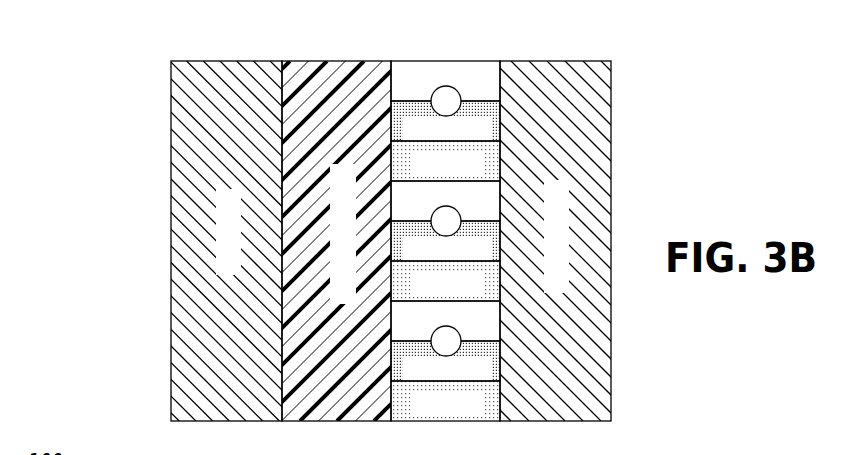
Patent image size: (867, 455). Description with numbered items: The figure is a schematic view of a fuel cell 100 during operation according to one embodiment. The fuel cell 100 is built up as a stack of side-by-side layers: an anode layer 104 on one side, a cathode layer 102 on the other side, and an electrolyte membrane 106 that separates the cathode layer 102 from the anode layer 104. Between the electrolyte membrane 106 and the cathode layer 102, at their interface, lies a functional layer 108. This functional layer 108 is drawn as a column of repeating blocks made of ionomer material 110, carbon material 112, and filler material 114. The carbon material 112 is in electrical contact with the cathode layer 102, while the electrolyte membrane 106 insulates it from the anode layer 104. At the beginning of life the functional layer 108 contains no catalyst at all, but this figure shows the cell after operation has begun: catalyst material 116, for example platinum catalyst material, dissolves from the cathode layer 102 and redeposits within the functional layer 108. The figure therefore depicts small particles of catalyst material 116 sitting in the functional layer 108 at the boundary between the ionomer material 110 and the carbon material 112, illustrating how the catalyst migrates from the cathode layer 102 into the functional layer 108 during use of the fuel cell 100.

The fuel cell 100 is at (141, 53).
The cathode layer 102 is at (552, 421).
The anode layer 104 is at (223, 421).
The electrolyte membrane 106 is at (335, 421).
The functional layer 108 is at (450, 56).
The ionomer material 110 is at (500, 83).
The carbon material 112 is at (500, 122).
The filler material 114 is at (500, 162).
The catalyst material 116 is at (431, 98).